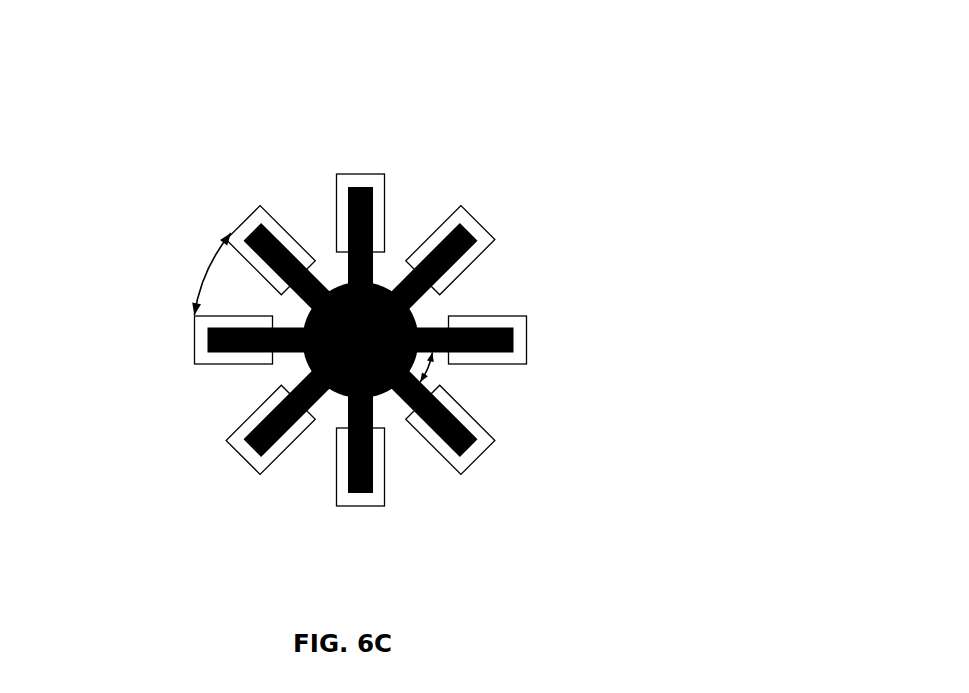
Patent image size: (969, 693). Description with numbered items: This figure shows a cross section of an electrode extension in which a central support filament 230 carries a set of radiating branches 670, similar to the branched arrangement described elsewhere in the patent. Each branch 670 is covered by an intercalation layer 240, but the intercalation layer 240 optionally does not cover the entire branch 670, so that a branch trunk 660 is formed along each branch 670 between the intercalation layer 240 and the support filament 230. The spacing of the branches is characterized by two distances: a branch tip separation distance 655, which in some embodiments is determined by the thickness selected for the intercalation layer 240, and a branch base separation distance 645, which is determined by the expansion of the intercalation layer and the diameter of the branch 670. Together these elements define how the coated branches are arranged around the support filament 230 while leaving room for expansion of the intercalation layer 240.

The support filament 230 is at (305, 365).
The branch 670 is at (373, 293).
The branch trunk 660 is at (251, 458).
The intercalation layer 240 is at (560, 207).
The branch tip separation distance 655 is at (205, 265).
The branch base separation distance 645 is at (435, 370).